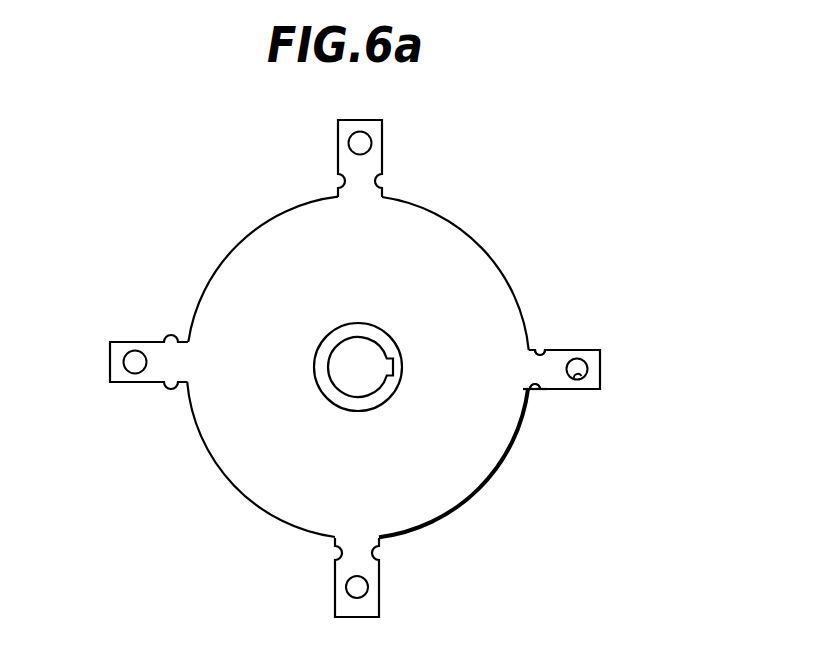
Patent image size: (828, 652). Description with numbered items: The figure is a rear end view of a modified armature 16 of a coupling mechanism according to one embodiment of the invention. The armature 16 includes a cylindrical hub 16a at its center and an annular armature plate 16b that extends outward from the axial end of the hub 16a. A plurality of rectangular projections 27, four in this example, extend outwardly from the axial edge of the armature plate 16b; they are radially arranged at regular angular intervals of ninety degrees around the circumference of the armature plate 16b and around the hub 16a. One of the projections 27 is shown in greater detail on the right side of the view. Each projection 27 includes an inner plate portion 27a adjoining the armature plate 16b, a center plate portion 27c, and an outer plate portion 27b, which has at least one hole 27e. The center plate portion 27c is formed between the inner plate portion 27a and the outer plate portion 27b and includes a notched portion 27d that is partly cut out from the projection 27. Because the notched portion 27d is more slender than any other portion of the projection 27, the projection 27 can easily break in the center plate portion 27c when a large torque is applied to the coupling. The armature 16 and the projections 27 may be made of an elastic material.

The armature 16 is at (246, 233).
The cylindrical hub 16a is at (385, 348).
The annular armature plate 16b is at (430, 257).
The projection 27 is at (602, 368).
The inner plate portion 27a is at (527, 363).
The outer plate portion 27b is at (588, 350).
The center plate portion 27c is at (542, 368).
The notched portion 27d is at (538, 390).
The hole 27e is at (581, 378).